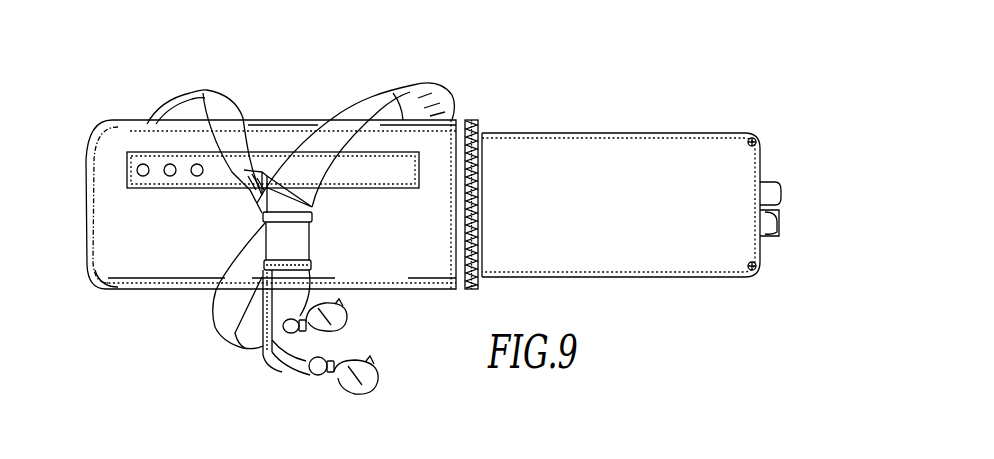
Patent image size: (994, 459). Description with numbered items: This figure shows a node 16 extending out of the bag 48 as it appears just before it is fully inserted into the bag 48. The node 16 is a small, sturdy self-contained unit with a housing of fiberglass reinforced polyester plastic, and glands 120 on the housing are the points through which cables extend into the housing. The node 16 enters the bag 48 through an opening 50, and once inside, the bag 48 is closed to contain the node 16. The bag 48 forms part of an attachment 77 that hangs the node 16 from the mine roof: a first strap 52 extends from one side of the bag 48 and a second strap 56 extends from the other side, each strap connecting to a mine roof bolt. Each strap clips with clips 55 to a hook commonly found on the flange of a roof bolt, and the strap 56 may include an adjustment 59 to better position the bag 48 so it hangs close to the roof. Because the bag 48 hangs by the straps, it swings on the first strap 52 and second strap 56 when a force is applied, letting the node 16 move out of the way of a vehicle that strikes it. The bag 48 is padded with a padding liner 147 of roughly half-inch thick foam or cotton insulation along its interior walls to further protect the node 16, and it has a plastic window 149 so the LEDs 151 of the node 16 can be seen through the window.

The node 16 is at (607, 124).
The bag 48 is at (413, 240).
The opening 50 is at (487, 131).
The first strap 52 is at (225, 110).
The clips 55 is at (346, 322).
The second strap 56 is at (343, 125).
The adjustment 59 is at (300, 238).
The attachment 77 is at (168, 297).
The glands 120 is at (770, 184).
The padding liner 147 is at (94, 288).
The plastic window 149 is at (136, 152).
The LEDs 151 is at (155, 182).